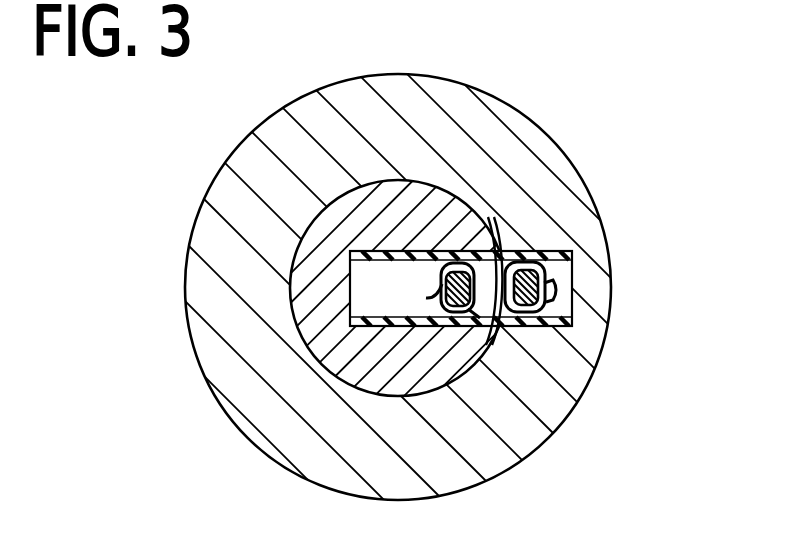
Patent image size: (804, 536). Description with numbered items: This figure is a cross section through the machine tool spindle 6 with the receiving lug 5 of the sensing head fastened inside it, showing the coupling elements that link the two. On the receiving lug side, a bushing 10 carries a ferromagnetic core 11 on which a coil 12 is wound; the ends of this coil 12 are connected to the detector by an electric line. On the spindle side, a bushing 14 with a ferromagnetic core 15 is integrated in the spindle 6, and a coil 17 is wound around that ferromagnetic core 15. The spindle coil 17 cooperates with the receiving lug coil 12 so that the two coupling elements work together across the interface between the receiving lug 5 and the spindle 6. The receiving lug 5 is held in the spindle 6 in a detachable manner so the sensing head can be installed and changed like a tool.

The receiving lug 5 is at (402, 198).
The spindle 6 is at (547, 156).
The bushing 10 is at (437, 320).
The ferromagnetic core 11 is at (455, 272).
The coil 12 is at (486, 345).
The bushing 14 is at (563, 260).
The ferromagnetic core 15 is at (545, 272).
The coil 17 is at (550, 304).